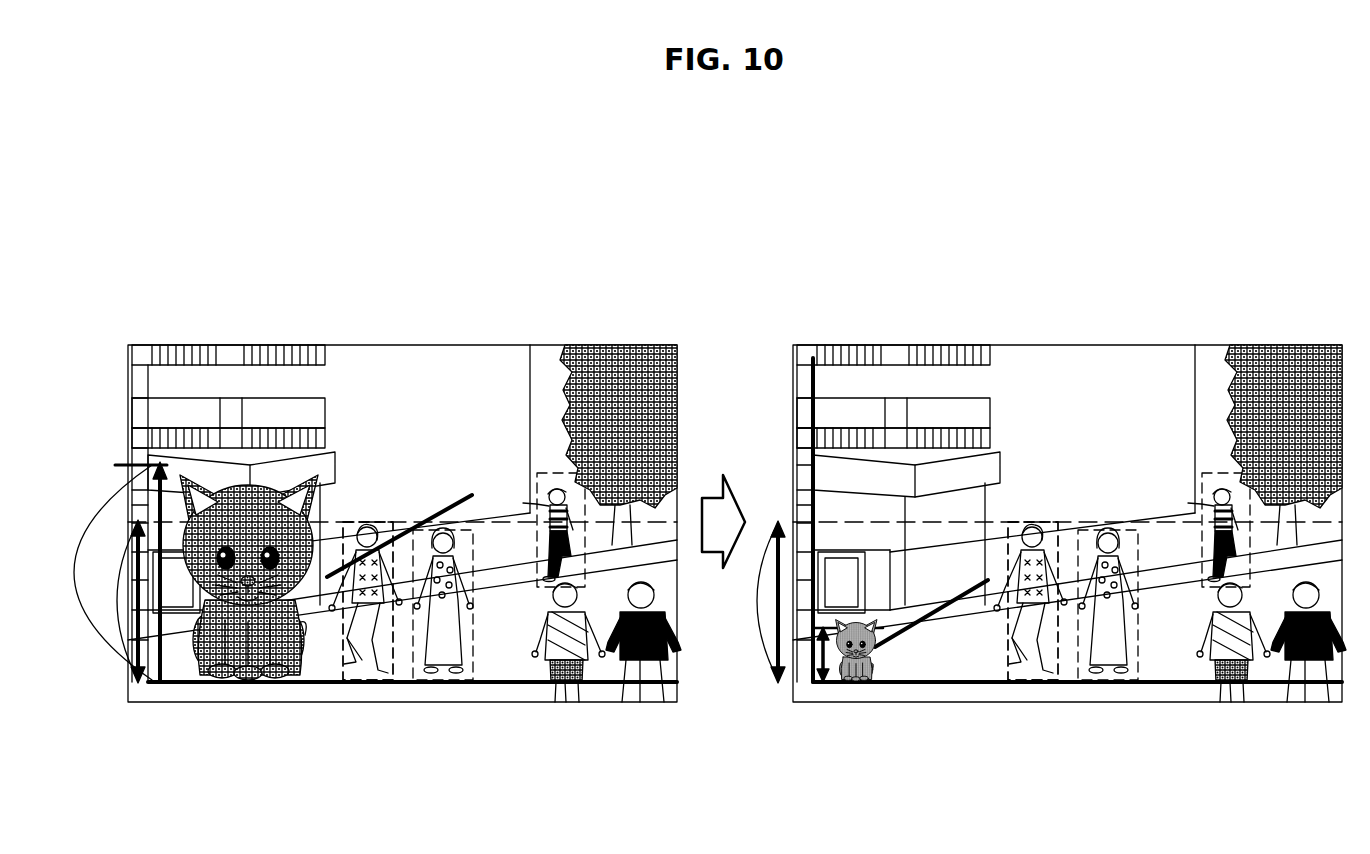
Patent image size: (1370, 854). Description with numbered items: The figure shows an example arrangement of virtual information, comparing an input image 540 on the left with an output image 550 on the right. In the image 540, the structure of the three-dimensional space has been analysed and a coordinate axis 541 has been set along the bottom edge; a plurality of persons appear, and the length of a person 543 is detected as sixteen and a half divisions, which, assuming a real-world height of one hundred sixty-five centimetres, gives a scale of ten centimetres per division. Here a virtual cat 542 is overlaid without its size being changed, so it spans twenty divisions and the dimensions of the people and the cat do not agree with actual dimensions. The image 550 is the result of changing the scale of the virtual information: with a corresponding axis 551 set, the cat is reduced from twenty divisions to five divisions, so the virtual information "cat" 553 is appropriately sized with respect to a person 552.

The image 540 is at (402, 344).
The coordinate axis 541 is at (520, 684).
The cat object image 542 is at (232, 675).
The person 543 is at (340, 650).
The image 550 is at (1067, 344).
The ground reference line 551 is at (1185, 684).
The person 552 is at (1005, 660).
The virtual information "cat" 553 is at (880, 682).